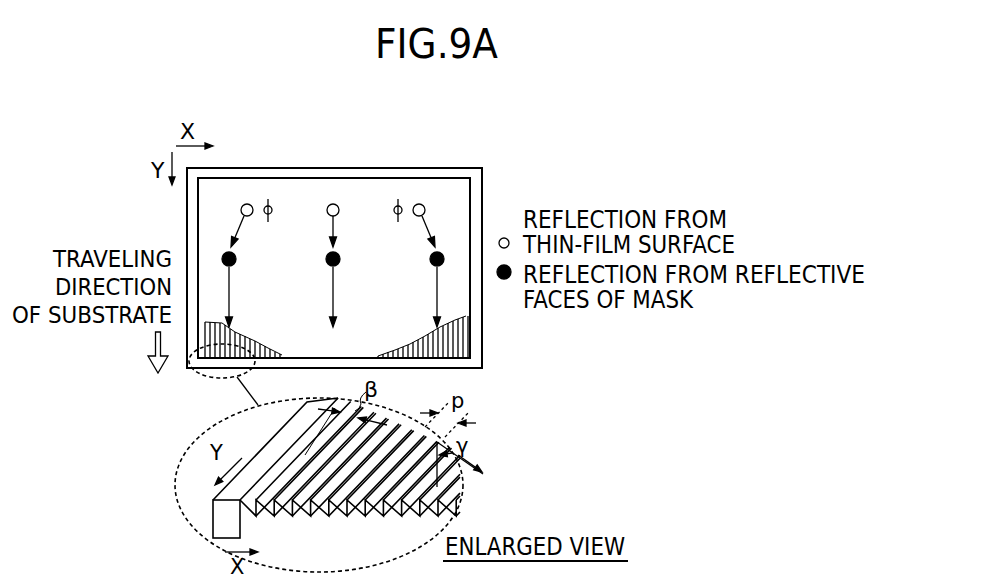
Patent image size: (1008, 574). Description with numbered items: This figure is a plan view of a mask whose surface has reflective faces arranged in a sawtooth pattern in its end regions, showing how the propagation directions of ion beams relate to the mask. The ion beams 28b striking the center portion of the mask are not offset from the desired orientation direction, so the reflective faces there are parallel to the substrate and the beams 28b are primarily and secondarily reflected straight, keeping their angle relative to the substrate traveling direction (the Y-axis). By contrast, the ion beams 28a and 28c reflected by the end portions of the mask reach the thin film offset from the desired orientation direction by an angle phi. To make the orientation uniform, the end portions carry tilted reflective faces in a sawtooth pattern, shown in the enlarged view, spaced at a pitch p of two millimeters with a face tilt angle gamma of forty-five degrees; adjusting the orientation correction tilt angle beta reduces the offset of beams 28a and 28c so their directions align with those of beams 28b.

The ion beam 28a is at (386, 212).
The ion beam 28b is at (333, 188).
The ion beam 28c is at (281, 212).